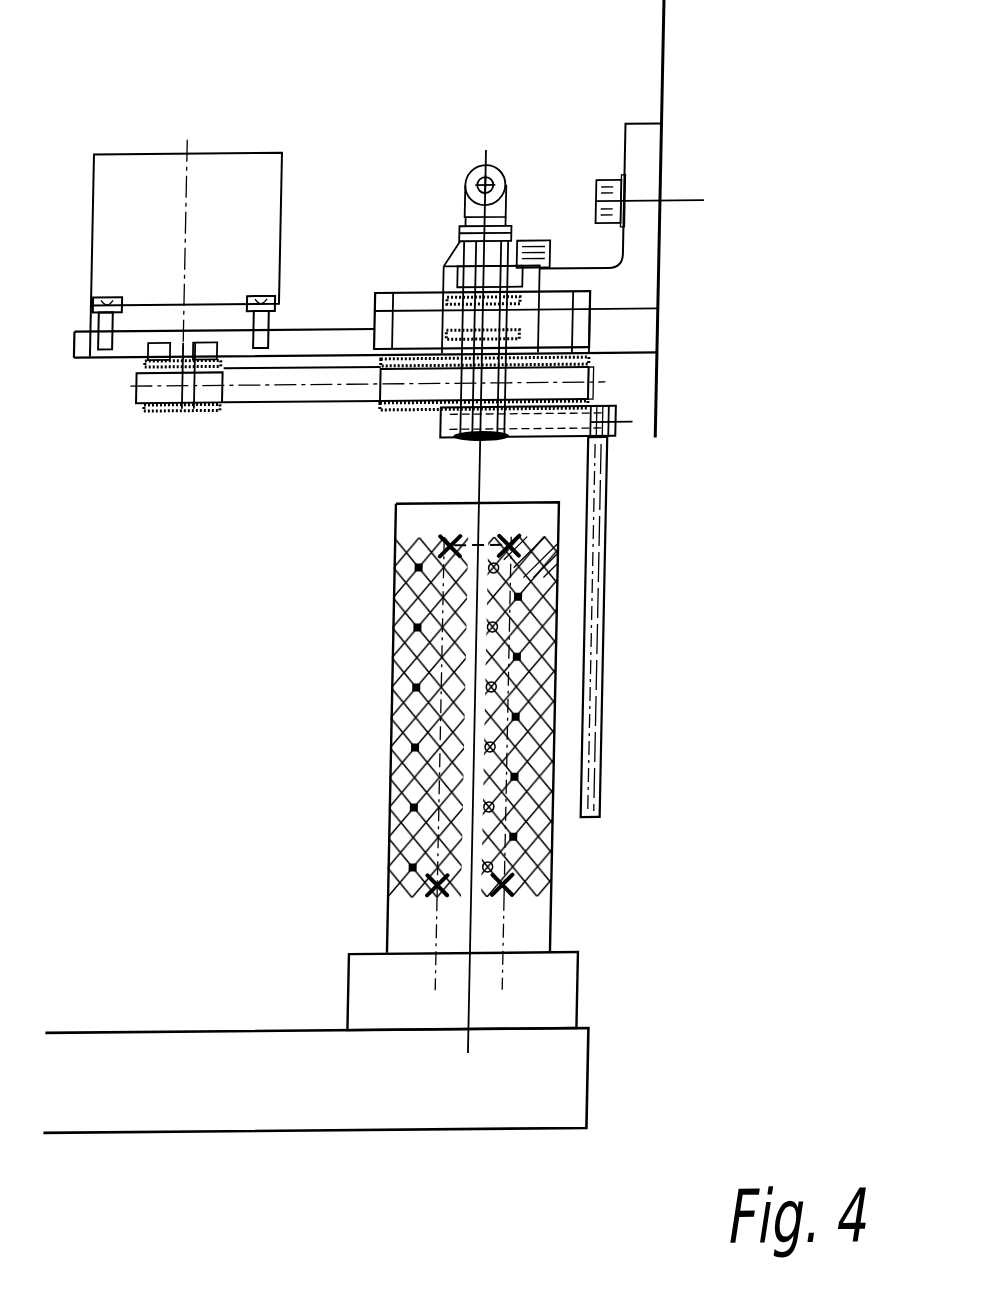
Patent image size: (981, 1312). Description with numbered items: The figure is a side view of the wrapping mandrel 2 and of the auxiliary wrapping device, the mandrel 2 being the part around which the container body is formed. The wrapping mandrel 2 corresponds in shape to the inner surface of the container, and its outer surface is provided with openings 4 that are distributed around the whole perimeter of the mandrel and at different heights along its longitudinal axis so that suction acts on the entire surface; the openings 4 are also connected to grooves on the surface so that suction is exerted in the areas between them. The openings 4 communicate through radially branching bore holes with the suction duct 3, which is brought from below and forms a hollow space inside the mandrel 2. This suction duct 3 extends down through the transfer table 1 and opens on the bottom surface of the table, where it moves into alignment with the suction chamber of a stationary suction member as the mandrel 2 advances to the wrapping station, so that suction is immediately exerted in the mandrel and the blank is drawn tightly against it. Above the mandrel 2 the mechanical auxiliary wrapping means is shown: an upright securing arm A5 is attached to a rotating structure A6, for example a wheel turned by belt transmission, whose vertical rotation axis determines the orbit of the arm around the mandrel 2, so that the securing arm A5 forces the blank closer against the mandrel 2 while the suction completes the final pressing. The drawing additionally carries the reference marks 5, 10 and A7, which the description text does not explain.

The transfer table 1 is at (364, 1104).
The wrapping mandrel 2 is at (393, 811).
The suction duct 3 is at (442, 912).
The openings 4 is at (415, 747).
The support block 5 is at (570, 993).
The frame wall 10 is at (648, 58).
The securing arm A5 is at (603, 684).
The rotating structure A6 is at (402, 407).
The shaft A7 is at (253, 391).